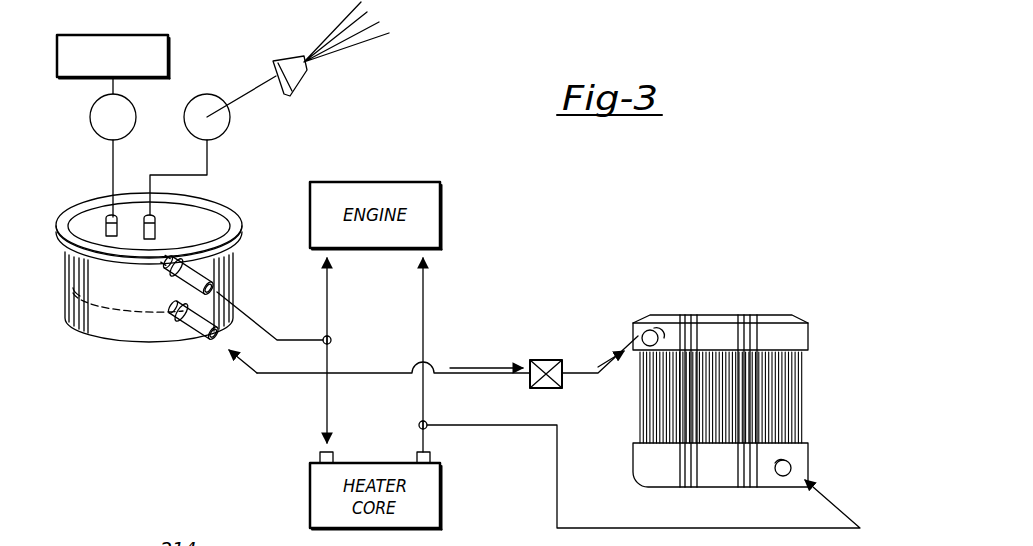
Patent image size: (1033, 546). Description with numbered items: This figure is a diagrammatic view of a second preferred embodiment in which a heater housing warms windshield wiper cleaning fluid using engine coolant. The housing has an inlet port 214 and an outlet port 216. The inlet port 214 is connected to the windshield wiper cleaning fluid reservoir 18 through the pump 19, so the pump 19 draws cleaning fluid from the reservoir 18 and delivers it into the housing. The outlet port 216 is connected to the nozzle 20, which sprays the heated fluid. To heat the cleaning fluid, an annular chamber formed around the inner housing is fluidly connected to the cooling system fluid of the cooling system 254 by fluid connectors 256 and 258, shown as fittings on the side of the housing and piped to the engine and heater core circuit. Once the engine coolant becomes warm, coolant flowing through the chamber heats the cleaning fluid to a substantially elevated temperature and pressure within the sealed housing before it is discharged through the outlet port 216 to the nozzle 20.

The windshield wiper cleaning fluid reservoir 18 is at (169, 53).
The pump 19 is at (90, 111).
The nozzle 20 is at (296, 80).
The inlet port 214 is at (162, 248).
The outlet port 216 is at (157, 230).
The cooling system 254 is at (718, 318).
The fluid connector 256 is at (196, 273).
The fluid connector 258 is at (183, 330).